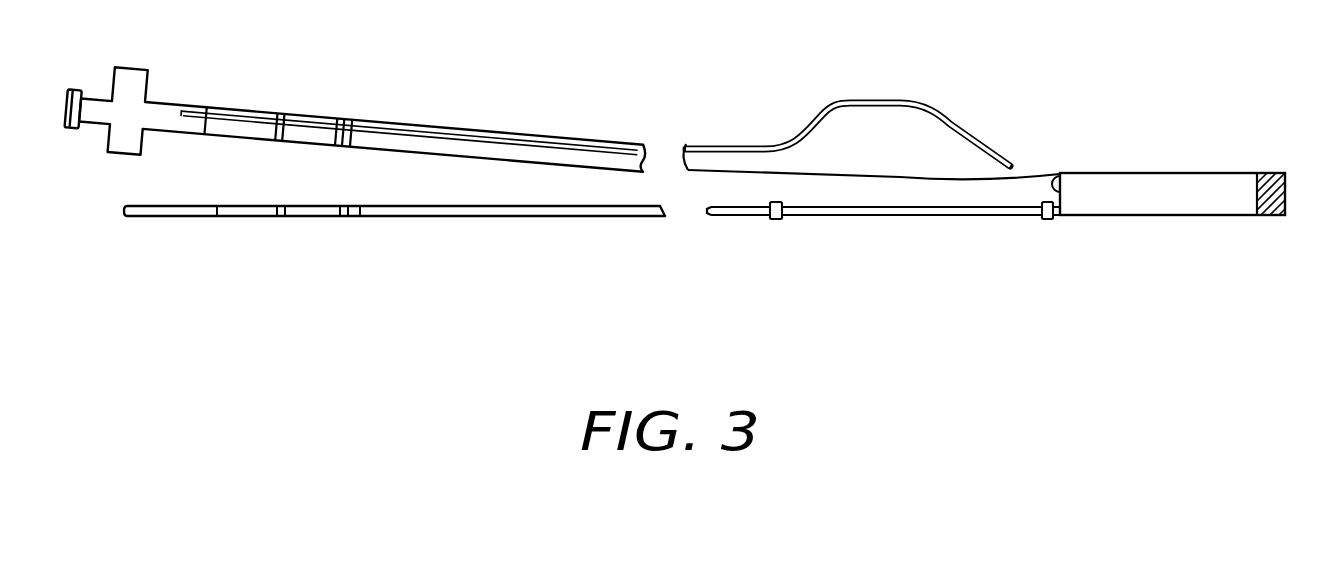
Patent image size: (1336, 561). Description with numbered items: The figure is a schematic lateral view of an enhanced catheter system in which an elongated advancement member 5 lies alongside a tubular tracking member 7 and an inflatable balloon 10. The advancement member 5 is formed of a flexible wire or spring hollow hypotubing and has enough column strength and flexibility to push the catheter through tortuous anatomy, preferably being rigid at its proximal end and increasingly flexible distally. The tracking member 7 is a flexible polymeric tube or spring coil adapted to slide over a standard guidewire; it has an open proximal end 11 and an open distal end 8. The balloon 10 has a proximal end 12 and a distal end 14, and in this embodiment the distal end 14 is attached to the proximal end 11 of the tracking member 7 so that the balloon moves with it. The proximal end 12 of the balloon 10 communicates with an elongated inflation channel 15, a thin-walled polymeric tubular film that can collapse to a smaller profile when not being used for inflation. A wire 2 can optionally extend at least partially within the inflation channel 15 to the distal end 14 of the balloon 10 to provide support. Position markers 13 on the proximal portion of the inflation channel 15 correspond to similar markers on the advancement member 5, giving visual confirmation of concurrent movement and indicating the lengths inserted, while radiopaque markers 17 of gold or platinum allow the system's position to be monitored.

The wire 2 is at (425, 123).
The advancement member 5 is at (490, 216).
The tracking member 7 is at (1198, 198).
The distal end of tracking member 8 is at (1287, 184).
The inflatable balloon 10 is at (886, 117).
The proximal end of tracking member 11 is at (1045, 173).
The proximal end of balloon 12 is at (788, 130).
The position markers 13 is at (355, 98).
The distal end of balloon 14 is at (995, 156).
The inflation channel 15 is at (527, 153).
The radiopaque markers 17 is at (782, 219).